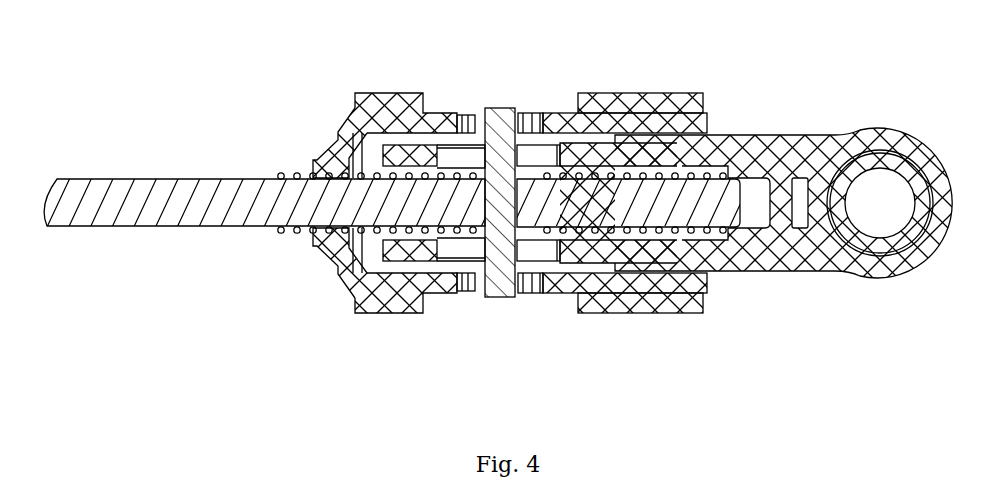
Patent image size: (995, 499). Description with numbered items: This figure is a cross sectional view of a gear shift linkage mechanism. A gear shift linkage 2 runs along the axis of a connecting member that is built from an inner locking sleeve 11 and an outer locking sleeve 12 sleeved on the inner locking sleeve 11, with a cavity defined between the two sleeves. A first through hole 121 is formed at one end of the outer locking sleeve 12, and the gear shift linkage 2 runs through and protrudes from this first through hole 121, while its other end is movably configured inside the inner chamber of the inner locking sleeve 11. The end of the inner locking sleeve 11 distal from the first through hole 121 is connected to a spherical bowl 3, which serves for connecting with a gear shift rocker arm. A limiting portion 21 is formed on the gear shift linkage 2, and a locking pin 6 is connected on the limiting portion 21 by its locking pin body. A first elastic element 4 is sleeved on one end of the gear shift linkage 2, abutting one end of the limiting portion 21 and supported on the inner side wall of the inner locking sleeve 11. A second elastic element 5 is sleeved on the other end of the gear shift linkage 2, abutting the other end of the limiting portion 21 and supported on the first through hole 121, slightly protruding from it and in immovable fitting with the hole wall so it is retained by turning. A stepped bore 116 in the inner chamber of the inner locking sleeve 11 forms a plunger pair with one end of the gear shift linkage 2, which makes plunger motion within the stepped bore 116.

The gear shift linkage 2 is at (250, 187).
The outer locking sleeve 12 is at (397, 125).
The first through hole 121 is at (313, 228).
The locking pin 6 is at (503, 152).
The limiting portion 21 is at (530, 172).
The inner locking sleeve 11 is at (737, 152).
The spherical bowl 3 is at (873, 133).
The second elastic element 5 is at (415, 232).
The first elastic element 4 is at (587, 230).
The stepped bore 116 is at (753, 222).